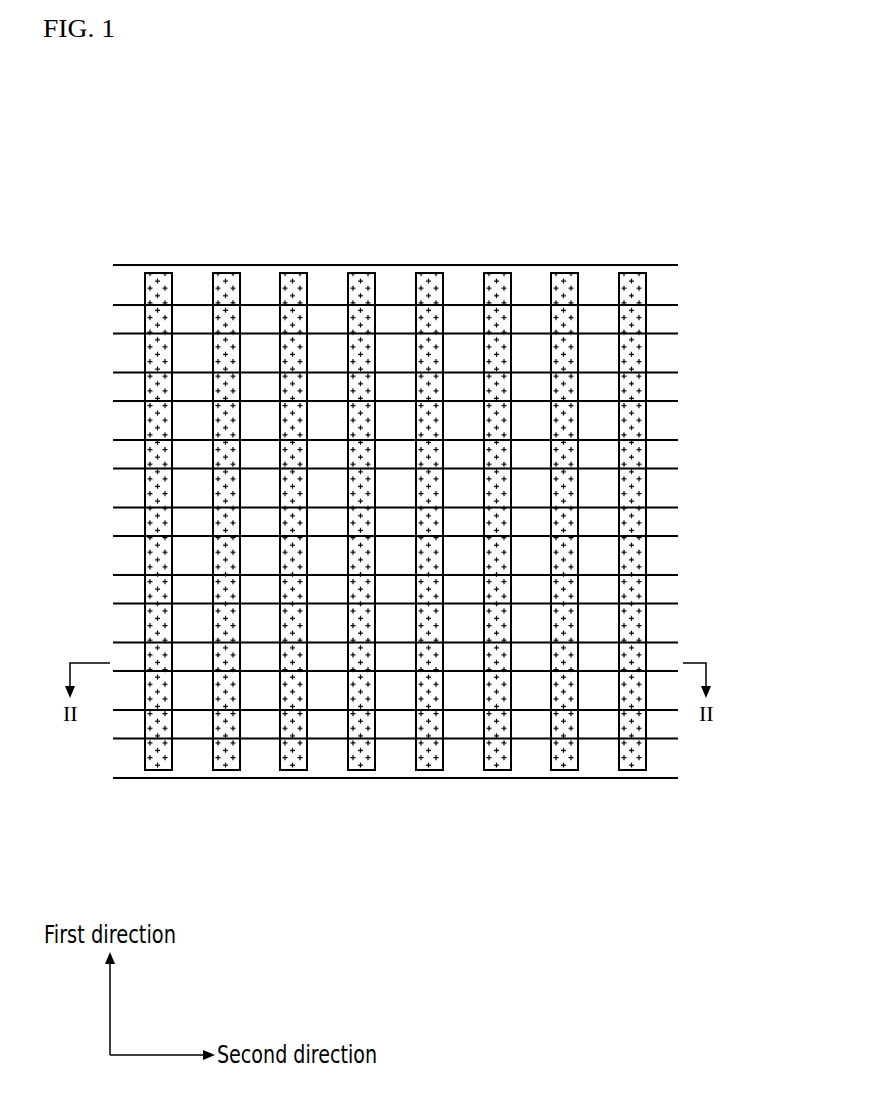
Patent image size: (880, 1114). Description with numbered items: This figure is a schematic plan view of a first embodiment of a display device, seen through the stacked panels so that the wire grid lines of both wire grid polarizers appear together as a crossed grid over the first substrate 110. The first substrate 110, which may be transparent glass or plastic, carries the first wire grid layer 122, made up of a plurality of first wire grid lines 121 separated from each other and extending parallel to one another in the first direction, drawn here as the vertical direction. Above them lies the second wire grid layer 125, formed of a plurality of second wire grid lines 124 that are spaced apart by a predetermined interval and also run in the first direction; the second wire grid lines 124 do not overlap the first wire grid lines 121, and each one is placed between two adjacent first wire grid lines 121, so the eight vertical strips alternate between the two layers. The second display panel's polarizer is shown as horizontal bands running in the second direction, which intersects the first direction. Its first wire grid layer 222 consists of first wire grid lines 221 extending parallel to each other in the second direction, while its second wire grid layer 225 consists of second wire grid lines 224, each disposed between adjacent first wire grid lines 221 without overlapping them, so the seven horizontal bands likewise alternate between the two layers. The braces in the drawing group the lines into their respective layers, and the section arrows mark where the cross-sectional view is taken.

The first substrate 110 is at (667, 284).
The first wire grid lines 121 is at (157, 762).
The first wire grid layer 122 is at (590, 843).
The second wire grid lines 124 is at (226, 281).
The second wire grid layer 125 is at (658, 200).
The first wire grid lines 221 is at (670, 319).
The first wire grid layer 222 is at (733, 773).
The second wire grid lines 224 is at (120, 387).
The second wire grid layer 225 is at (63, 373).